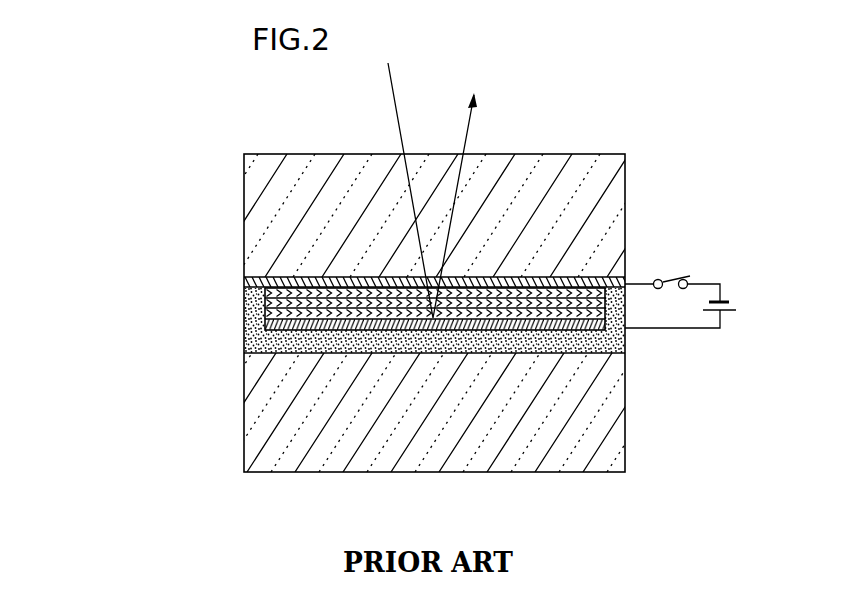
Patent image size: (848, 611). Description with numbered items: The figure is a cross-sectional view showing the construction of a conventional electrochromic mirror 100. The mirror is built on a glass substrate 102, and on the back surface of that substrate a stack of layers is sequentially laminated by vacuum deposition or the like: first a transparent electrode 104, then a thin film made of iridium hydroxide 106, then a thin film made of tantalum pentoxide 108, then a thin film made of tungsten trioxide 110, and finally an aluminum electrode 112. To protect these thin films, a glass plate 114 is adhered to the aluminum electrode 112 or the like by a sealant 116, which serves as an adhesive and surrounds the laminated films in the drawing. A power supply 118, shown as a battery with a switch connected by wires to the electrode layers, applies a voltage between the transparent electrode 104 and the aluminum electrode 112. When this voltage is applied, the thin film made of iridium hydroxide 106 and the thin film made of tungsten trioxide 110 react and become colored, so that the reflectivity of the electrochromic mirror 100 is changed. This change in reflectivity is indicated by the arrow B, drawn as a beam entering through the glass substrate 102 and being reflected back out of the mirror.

The electrochromic mirror 100 is at (550, 106).
The glass substrate 102 is at (244, 178).
The transparent electrode 104 is at (305, 278).
The thin film made of iridium hydroxide 106 is at (246, 291).
The thin film made of tantalum pentoxide 108 is at (246, 302).
The thin film made of tungsten trioxide 110 is at (246, 328).
The aluminum electrode 112 is at (244, 352).
The glass plate 114 is at (247, 413).
The sealant 116 is at (625, 338).
The power supply 118 is at (713, 268).
The arrow B is at (396, 112).